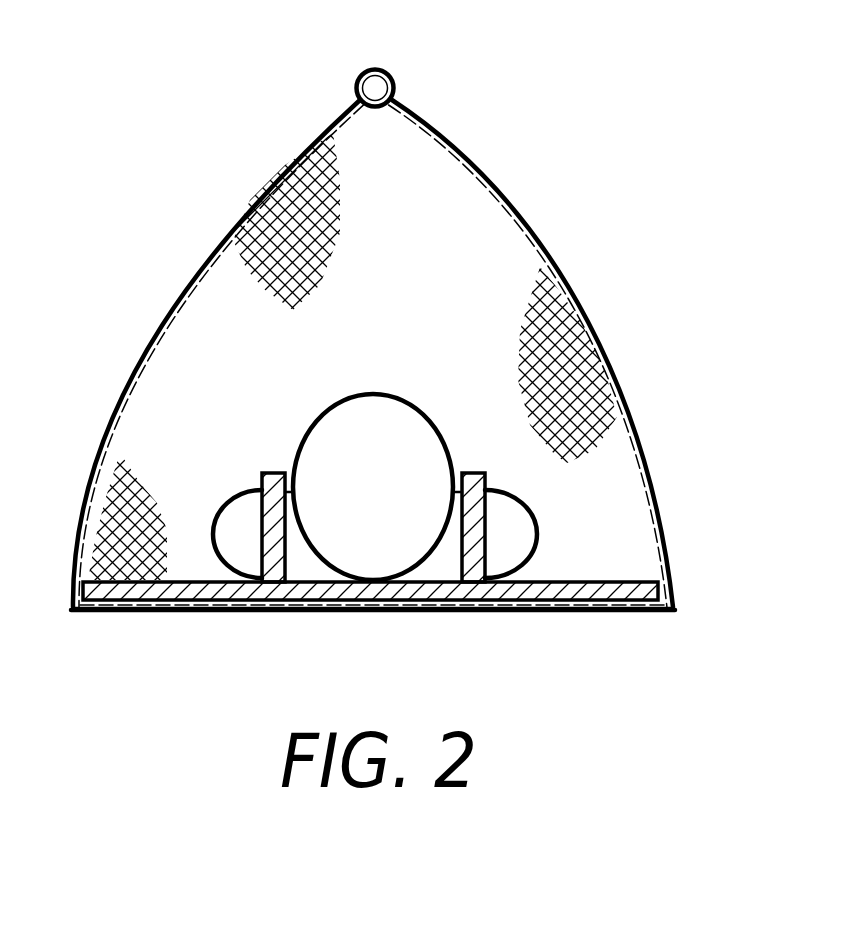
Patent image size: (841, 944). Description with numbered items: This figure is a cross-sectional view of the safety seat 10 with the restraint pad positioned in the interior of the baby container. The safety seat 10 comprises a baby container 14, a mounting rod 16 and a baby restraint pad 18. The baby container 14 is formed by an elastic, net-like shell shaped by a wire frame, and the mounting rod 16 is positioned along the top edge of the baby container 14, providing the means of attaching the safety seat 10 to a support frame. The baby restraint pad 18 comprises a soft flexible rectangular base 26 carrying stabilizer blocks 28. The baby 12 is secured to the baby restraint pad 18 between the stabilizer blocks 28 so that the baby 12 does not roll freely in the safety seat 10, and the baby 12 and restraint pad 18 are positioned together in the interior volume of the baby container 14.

The safety seat 10 is at (175, 192).
The baby 12 is at (347, 412).
The baby container 14 is at (537, 240).
The mounting rod 16 is at (390, 72).
The baby restraint pad 18 is at (650, 580).
The rectangular base 26 is at (567, 612).
The stabilizer blocks 28 is at (273, 560).